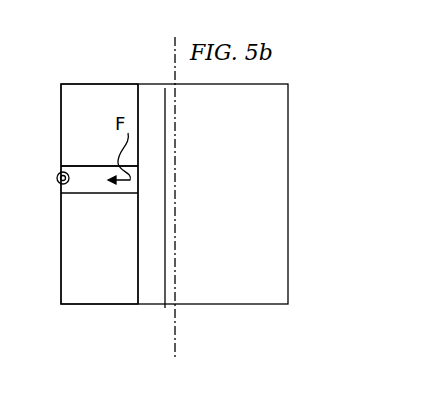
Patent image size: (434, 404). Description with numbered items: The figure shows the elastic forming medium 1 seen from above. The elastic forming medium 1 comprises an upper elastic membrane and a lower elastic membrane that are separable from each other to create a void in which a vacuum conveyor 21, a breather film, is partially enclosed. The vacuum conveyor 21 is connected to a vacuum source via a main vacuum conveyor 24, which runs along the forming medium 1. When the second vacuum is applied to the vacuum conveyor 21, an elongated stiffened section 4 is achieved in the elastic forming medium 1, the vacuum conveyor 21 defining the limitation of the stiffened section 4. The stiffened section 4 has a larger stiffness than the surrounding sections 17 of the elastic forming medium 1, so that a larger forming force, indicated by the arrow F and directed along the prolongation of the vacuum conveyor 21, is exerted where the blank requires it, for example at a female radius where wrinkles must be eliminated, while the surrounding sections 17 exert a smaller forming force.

The elastic forming medium 1 is at (288, 105).
The stiffened section 4 is at (112, 160).
The surrounding sections 17 is at (106, 90).
The vacuum conveyor 21 is at (118, 196).
The main vacuum conveyor 24 is at (152, 299).